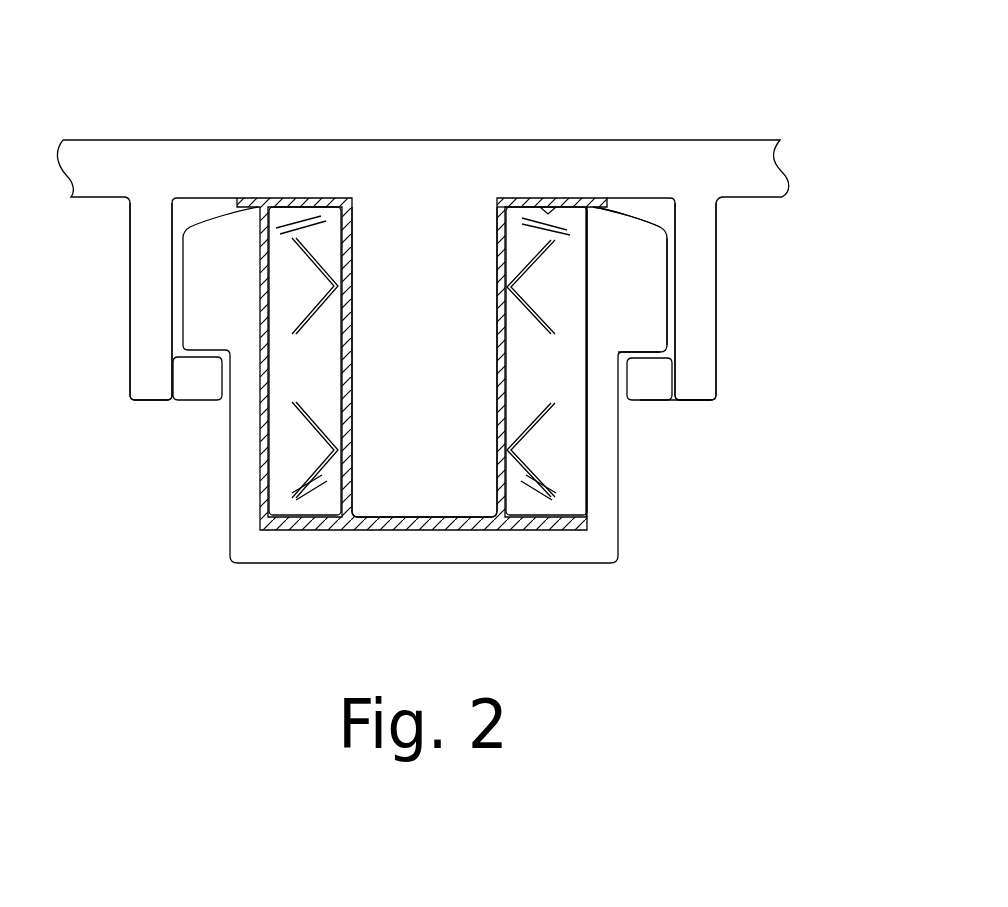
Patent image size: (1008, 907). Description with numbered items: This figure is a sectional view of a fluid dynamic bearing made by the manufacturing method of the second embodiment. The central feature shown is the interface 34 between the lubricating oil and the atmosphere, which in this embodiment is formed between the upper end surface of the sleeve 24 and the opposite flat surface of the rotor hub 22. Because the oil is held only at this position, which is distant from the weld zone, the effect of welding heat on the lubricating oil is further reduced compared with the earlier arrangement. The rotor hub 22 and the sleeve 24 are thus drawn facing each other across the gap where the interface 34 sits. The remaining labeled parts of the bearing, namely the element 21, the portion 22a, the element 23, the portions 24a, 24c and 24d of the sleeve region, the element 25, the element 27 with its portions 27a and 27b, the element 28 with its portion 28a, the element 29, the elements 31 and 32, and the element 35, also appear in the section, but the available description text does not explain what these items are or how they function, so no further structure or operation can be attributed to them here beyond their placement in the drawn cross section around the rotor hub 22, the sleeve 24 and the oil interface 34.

The groove 21 is at (392, 337).
The rotor hub 22 is at (260, 173).
The engaging portion of housing 22a is at (552, 213).
The leg portion 23 is at (147, 337).
The sleeve 24 is at (112, 480).
The inner wall of seal member 24a is at (512, 208).
The step portion of seal member 24c is at (635, 352).
The flange portion of seal member 24d is at (653, 270).
The projection 25 is at (650, 387).
The lip 27 is at (505, 290).
The upper lip 27a is at (340, 305).
The lower lip 27b is at (330, 455).
The elastic member 28 is at (585, 200).
The upper portion of elastic member 28a is at (287, 228).
The housing assembly 29 is at (355, 94).
The outer shell 31 is at (247, 500).
The elastic body 32 is at (293, 468).
The interface 34 is at (593, 207).
The bottom surface 35 is at (673, 397).